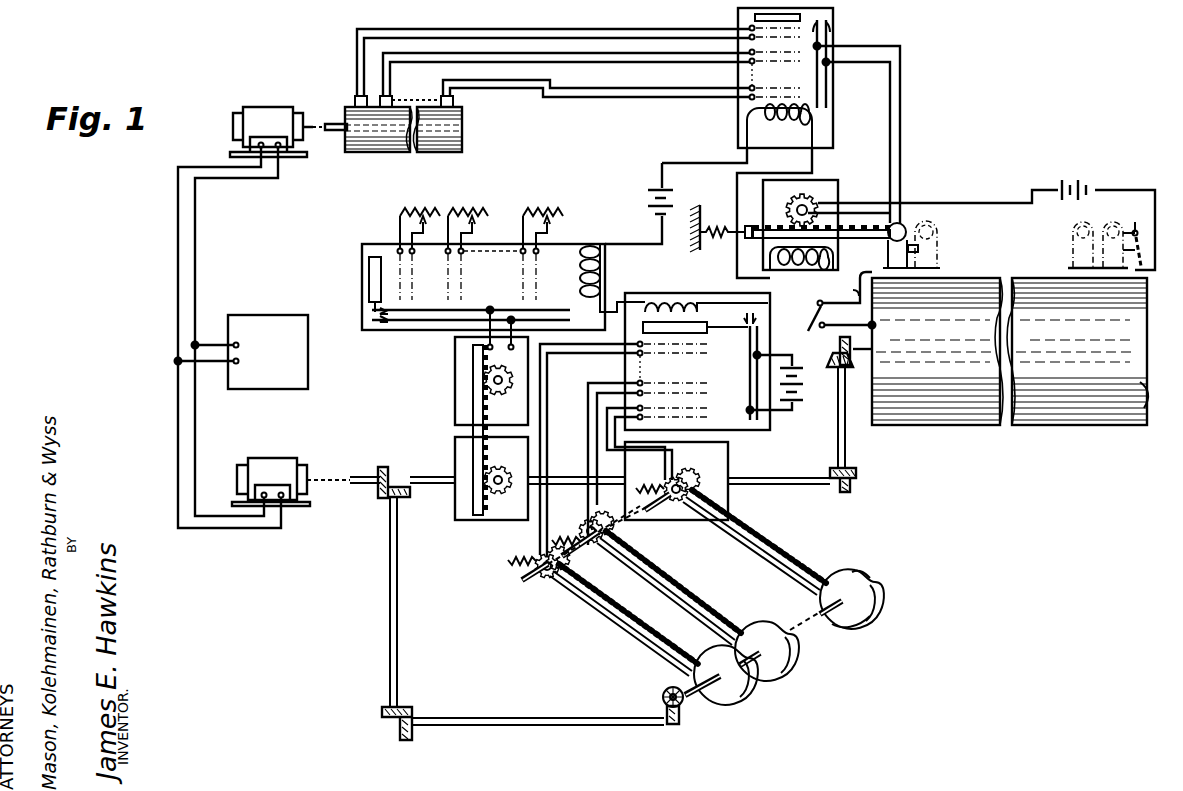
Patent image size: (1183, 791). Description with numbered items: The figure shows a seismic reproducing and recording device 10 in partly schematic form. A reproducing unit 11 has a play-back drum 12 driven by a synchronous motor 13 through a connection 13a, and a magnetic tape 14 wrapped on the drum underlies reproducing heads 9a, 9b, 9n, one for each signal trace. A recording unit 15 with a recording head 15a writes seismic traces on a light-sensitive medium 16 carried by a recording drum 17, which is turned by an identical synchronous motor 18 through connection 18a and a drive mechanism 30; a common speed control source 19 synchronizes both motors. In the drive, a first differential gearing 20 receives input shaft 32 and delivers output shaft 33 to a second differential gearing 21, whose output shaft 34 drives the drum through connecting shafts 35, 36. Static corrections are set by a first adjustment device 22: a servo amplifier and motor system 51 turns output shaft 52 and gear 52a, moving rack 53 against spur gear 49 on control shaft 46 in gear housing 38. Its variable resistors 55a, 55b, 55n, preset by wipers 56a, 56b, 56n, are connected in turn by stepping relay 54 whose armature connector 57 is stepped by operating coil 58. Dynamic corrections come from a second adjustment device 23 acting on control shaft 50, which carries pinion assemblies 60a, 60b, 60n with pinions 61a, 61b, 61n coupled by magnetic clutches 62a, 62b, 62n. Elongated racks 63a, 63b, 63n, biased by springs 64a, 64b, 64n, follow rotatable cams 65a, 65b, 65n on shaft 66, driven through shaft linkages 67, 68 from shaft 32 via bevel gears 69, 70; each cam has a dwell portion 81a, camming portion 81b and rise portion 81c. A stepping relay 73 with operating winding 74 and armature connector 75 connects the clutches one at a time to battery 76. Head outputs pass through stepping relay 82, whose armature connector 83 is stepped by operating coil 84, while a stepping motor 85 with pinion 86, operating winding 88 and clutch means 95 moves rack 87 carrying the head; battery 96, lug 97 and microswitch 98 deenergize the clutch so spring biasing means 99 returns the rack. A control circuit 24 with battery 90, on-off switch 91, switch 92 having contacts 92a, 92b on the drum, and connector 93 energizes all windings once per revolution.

The reproducing head 9a is at (353, 99).
The reproducing head 9b is at (390, 97).
The reproducing head 9n is at (453, 100).
The reproducing and recording device 10 is at (1011, 364).
The reproducing unit 11 is at (415, 158).
The play-back drum 12 is at (347, 152).
The synchronous motor 13 is at (264, 109).
The mechanical connection 13a is at (310, 120).
The magnetic tape 14 is at (459, 122).
The recording unit 15 is at (987, 239).
The recording head 15a is at (918, 252).
The permanent record medium 16 is at (1150, 420).
The recording drum 17 is at (1053, 426).
The synchronous motor 18 is at (265, 460).
The connection 18a is at (333, 474).
The speed control source 19 is at (277, 315).
The first differential gearing 20 is at (453, 451).
The second differential gearing 21 is at (730, 503).
The first adjustment device 22 is at (394, 362).
The second adjustment device 23 is at (578, 368).
The control circuit 24 is at (682, 236).
The drive mechanism 30 is at (363, 540).
The input shaft 32 is at (413, 474).
The output shaft 33 is at (558, 476).
The output shaft 34 is at (796, 484).
The connecting shaft 35 is at (838, 428).
The connecting shaft 36 is at (853, 364).
The gear housing 38 is at (455, 504).
The control shaft 46 is at (506, 468).
The spur gear 49 is at (473, 476).
The control shaft 50 is at (688, 470).
The servo amplifier and motor system 51 is at (452, 348).
The output shaft 52 is at (480, 375).
The gear 52a is at (482, 388).
The rack 53 is at (471, 402).
The stepping relay 54 is at (362, 286).
The variable resistor 55a is at (404, 211).
The variable resistor 55b is at (482, 211).
The variable resistor 55n is at (528, 211).
The wiper 56a is at (408, 238).
The wiper 56b is at (471, 234).
The wiper 56n is at (547, 234).
The armature connector 57 is at (363, 266).
The operating coil 58 is at (598, 273).
The pinion assembly 60a is at (538, 594).
The pinion assembly 60b is at (577, 568).
The pinion assembly 60n is at (722, 461).
The pinion 61a is at (554, 582).
The pinion 61b is at (600, 554).
The pinion 61n is at (691, 482).
The magnetic clutch 62a is at (524, 575).
The magnetic clutch 62b is at (698, 527).
The magnetic clutch 62n is at (668, 516).
The elongated rack 63a is at (616, 630).
The elongated rack 63b is at (680, 596).
The elongated rack 63n is at (790, 553).
The spring 64a is at (512, 553).
The spring 64b is at (559, 558).
The spring 64n is at (647, 471).
The rotatable cam 65a is at (722, 712).
The rotatable cam 65b is at (796, 648).
The rotatable cam 65n is at (866, 603).
The shaft 66 is at (687, 702).
The shaft linkage 67 is at (602, 721).
The shaft linkage 68 is at (390, 618).
The bevel gear 69 is at (366, 494).
The bevel gear 70 is at (381, 500).
The stepping relay 73 is at (741, 426).
The operating winding 74 is at (658, 296).
The armature connector 75 is at (694, 319).
The battery 76 is at (803, 384).
The dwell portion 81a is at (866, 559).
The camming portion 81b is at (860, 595).
The rise portion 81c is at (834, 569).
The stepping relay 82 is at (736, 113).
The armature connector 83 is at (751, 18).
The operating coil 84 is at (781, 130).
The stepping motor 85 is at (838, 192).
The pinion 86 is at (782, 204).
The rack 87 is at (846, 233).
The operating winding 88 is at (802, 270).
The battery 90 is at (642, 206).
The on-off switch 91 is at (807, 323).
The automatically operated switch 92 is at (844, 286).
The contact 92a is at (858, 278).
The stationary contact 92b is at (858, 298).
The connector 93 is at (875, 325).
The clutch means 95 is at (806, 199).
The battery 96 is at (1092, 193).
The lug 97 is at (902, 229).
The microswitch 98 is at (1136, 232).
The spring biasing means 99 is at (706, 235).